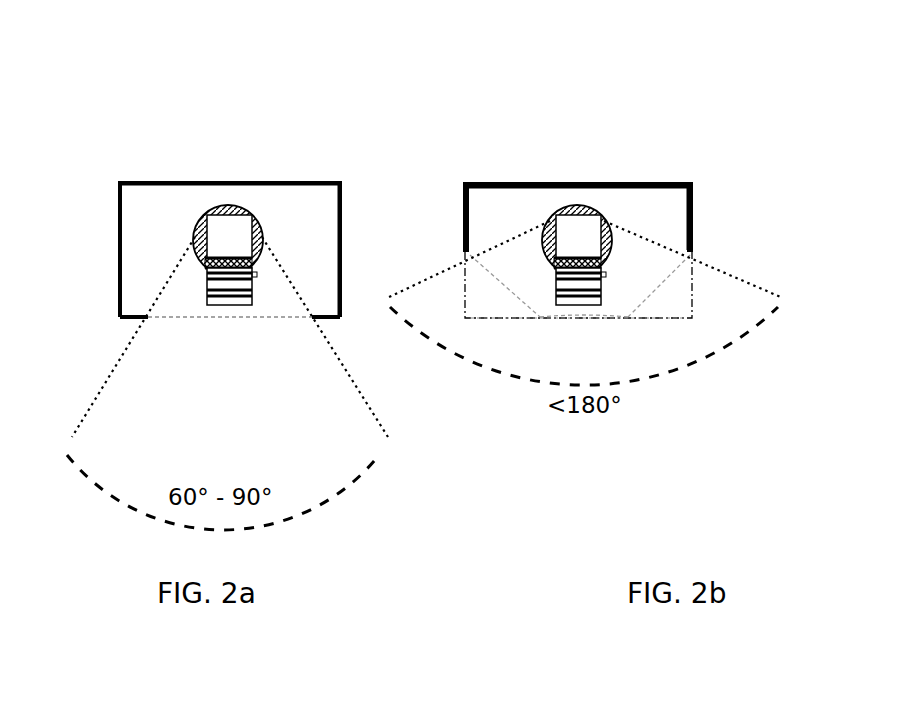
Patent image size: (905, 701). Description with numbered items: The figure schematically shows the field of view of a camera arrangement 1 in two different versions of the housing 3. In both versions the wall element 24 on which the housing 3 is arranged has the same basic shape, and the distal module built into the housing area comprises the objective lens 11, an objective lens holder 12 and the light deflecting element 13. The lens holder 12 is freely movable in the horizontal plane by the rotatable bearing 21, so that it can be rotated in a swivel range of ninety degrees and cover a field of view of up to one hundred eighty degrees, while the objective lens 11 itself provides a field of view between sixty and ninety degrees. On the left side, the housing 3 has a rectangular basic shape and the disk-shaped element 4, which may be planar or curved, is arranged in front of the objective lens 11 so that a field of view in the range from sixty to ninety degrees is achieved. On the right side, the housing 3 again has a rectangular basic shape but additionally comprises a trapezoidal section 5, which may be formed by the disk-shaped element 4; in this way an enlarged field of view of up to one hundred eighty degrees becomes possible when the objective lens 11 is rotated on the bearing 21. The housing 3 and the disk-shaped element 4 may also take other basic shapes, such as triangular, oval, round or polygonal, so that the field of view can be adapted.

In FIG. 2a, the lighting device 1 is at (190, 92).
In FIG. 2b, the lighting device 1 is at (535, 102).
In FIG. 2a, the housing 3 is at (286, 182).
In FIG. 2b, the housing 3 is at (503, 182).
In FIG. 2a, the disk-shaped element 4 is at (225, 320).
In FIG. 2b, the disk-shaped element 4 is at (586, 322).
In FIG. 2b, the trapezoidal section 5 is at (803, 255).
In FIG. 2a, the objective lens 11 is at (214, 282).
In FIG. 2b, the objective lens 11 is at (603, 283).
In FIG. 2a, the objective lens holder 12 is at (207, 264).
In FIG. 2b, the objective lens holder 12 is at (605, 264).
In FIG. 2a, the light deflecting element 13 is at (218, 213).
In FIG. 2b, the light deflecting element 13 is at (588, 213).
In FIG. 2a, the rotatable bearing 21 is at (227, 240).
In FIG. 2b, the rotatable bearing 21 is at (577, 240).
In FIG. 2a, the wall element 24 is at (311, 203).
In FIG. 2b, the wall element 24 is at (533, 200).